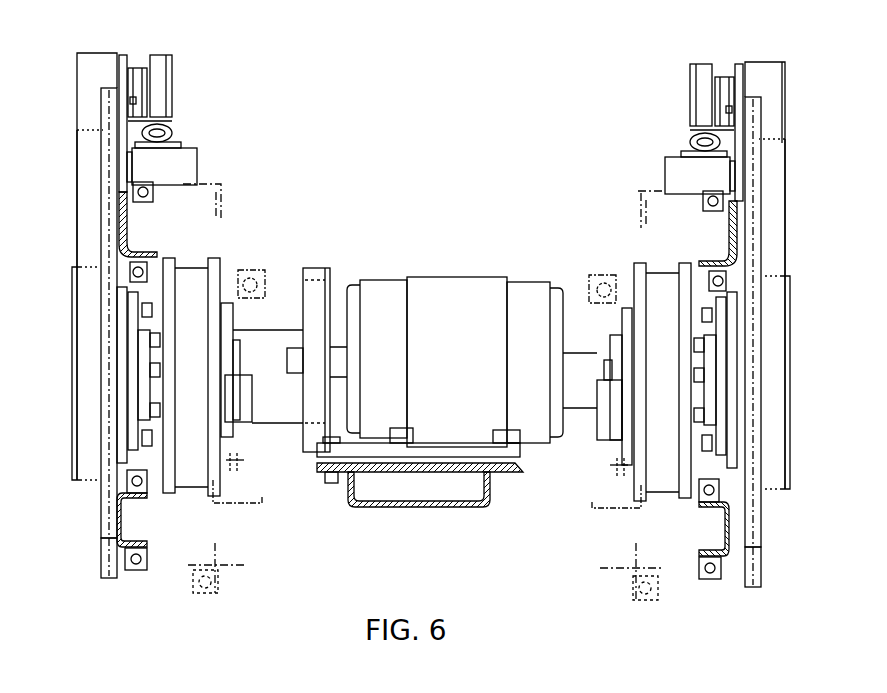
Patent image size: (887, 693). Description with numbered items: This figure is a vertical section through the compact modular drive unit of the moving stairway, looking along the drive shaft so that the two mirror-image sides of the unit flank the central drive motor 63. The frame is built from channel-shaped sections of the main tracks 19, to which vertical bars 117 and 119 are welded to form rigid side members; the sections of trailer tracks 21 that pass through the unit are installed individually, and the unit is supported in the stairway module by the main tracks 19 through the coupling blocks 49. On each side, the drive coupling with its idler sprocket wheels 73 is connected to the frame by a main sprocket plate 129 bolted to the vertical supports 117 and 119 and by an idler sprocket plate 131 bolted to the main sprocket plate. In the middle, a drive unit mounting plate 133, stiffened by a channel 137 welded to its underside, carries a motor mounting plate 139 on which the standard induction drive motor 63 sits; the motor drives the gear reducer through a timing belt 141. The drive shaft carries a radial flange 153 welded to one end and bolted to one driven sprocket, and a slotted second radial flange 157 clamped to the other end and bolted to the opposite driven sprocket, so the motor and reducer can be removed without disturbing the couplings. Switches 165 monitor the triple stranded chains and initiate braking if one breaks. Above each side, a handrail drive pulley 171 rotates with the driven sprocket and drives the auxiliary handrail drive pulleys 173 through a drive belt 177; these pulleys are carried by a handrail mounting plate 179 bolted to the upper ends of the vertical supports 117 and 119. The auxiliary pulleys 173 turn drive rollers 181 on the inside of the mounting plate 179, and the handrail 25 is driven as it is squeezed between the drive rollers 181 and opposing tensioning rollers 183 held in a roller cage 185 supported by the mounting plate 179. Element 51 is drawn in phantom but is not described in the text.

The main tracks 19 is at (150, 205).
The trailer tracks 21 is at (265, 272).
The handrail 25 is at (174, 130).
The coupling blocks 49 is at (148, 560).
The bolt 51 is at (224, 188).
The drive motor 63 is at (460, 277).
The idler sprocket wheels 73 is at (215, 259).
The vertical bar 117 is at (99, 561).
The vertical bar 119 is at (99, 507).
The main sprocket plates 129 is at (142, 262).
The idler sprocket plates 131 is at (140, 458).
The drive unit mounting plate 133 is at (500, 473).
The channel 137 is at (468, 506).
The motor mounting plate 139 is at (517, 466).
The timing belt 141 is at (326, 268).
The radial flange 153 is at (580, 346).
The second radial flange 157 is at (275, 330).
The switches 165 is at (236, 462).
The handrail drive pulley 171 is at (72, 357).
The auxiliary handrail drive pulleys 173 is at (77, 106).
The drive belt 177 is at (77, 182).
The handrail mounting plate 179 is at (124, 55).
The drive rollers 181 is at (173, 70).
The tensioning rollers 183 is at (182, 146).
The roller cage 185 is at (198, 167).